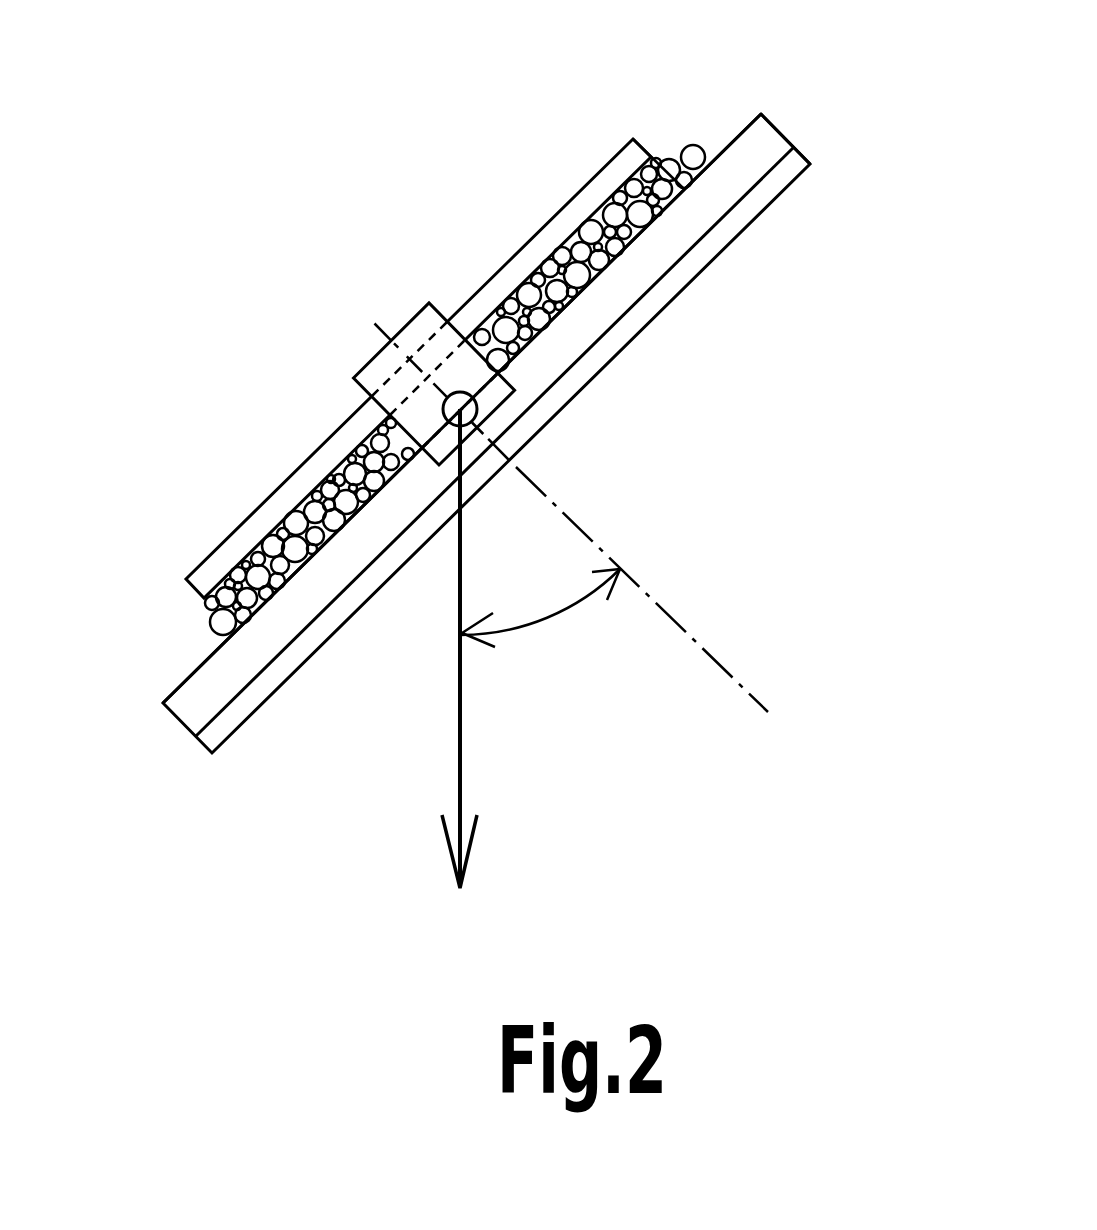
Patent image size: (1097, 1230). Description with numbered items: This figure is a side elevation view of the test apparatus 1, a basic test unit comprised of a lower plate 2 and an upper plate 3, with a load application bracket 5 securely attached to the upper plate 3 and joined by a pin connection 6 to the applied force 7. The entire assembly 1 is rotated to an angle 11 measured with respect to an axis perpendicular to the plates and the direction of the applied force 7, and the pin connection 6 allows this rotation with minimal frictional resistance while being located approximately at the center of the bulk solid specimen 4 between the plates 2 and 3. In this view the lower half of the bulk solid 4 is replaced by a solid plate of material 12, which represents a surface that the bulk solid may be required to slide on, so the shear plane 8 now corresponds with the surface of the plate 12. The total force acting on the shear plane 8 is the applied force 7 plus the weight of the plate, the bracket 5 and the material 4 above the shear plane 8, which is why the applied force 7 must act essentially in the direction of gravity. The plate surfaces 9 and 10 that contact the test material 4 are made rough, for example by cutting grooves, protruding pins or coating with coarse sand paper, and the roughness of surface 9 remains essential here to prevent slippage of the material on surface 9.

The test unit 1 is at (778, 393).
The lower plate 2 is at (392, 557).
The upper plate 3 is at (300, 482).
The bulk solid specimen 4 is at (670, 157).
The load application bracket 5 is at (422, 330).
The pin connection 6 is at (460, 409).
The applied force 7 is at (459, 689).
The shear plane 8 is at (207, 655).
The surface of upper plate 9 is at (580, 230).
The surface of lower plate 10 is at (553, 383).
The angle 11 is at (614, 589).
The solid plate of material 12 is at (755, 152).